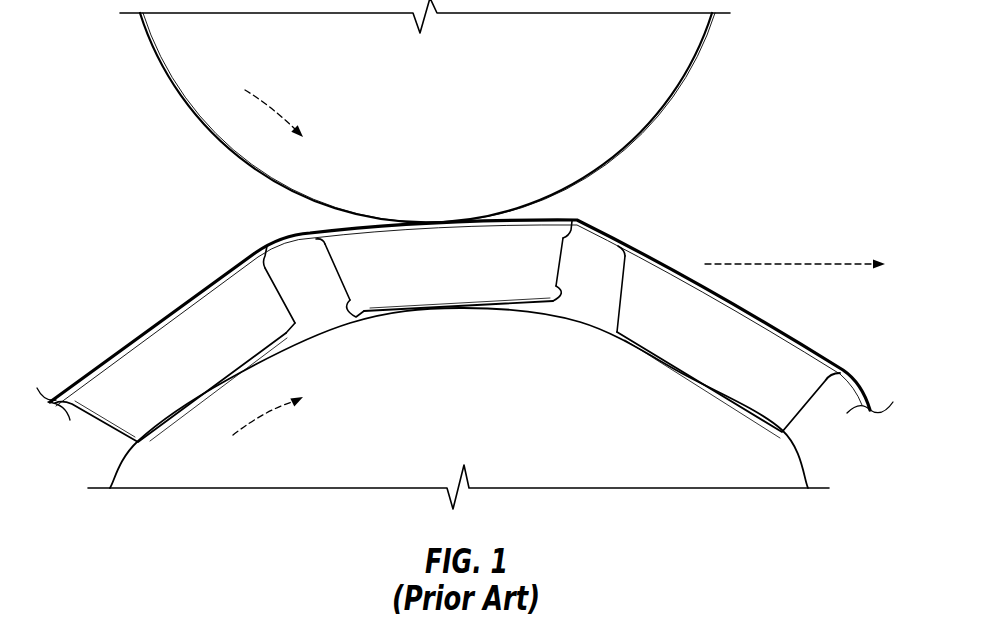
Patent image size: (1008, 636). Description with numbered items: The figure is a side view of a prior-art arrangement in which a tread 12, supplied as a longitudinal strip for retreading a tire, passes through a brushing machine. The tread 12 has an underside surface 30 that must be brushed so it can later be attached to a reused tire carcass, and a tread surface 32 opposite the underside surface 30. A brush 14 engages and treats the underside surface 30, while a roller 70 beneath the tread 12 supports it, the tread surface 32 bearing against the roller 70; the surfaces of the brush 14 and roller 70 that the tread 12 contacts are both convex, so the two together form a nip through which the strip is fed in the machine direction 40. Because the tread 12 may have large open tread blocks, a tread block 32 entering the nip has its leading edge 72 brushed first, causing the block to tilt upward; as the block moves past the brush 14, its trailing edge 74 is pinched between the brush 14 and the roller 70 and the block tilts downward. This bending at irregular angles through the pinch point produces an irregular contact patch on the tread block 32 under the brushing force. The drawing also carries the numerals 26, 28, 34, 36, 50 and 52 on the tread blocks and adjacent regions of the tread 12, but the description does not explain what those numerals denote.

The tread 12 is at (813, 371).
The brush 14 is at (668, 100).
The rigid block 26 is at (325, 295).
The leading side of block 28 is at (290, 255).
The underside surface 30 is at (655, 250).
The tread surface 32 is at (482, 277).
The bottom surface of belt 34 is at (398, 322).
The trailing side of block 36 is at (606, 312).
The machine direction 40 is at (793, 267).
The corner gap at block bottom 50 is at (310, 315).
The side face of block 52 is at (335, 283).
The roller 70 is at (574, 475).
The leading edge 72 is at (562, 296).
The trailing edge 74 is at (351, 304).